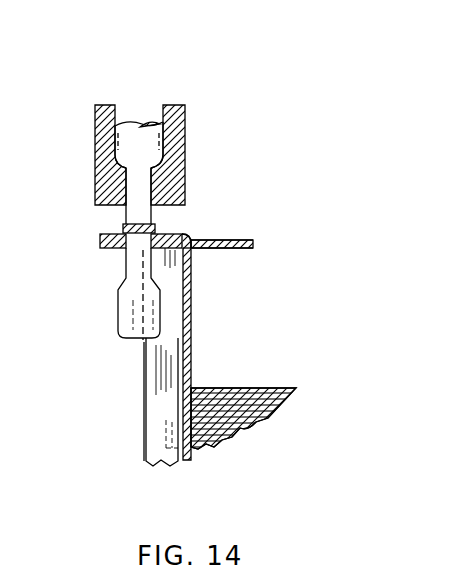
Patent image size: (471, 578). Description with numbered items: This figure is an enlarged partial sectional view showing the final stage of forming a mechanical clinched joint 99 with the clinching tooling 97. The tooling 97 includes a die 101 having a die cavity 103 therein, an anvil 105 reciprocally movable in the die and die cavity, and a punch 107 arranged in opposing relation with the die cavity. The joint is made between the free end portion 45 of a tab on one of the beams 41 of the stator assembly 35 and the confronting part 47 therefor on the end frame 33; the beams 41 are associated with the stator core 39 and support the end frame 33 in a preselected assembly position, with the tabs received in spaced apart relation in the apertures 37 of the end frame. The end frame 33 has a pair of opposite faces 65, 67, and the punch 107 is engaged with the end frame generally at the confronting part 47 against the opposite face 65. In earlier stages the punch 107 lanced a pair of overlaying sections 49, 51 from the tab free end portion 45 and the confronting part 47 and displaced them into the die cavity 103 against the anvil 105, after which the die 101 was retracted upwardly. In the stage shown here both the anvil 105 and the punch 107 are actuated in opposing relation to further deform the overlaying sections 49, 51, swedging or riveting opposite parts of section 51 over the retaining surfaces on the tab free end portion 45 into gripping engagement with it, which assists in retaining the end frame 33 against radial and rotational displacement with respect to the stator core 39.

The tooling 97 is at (82, 76).
The die 101 is at (95, 109).
The anvil 105 is at (153, 122).
The die cavity 103 is at (113, 165).
The overlaying section 49 is at (186, 220).
The overlaying section 51 is at (198, 226).
The mechanical clinched joint 99 is at (323, 208).
The opposite face 67 is at (240, 240).
The end frame 33 is at (260, 249).
The opposite face 65 is at (240, 249).
The apertures 37 is at (200, 256).
The free end portion 45 is at (108, 236).
The confronting part 47 is at (105, 249).
The punch 107 is at (118, 324).
The beams 41 is at (165, 470).
The stator core 39 is at (266, 421).
The stator assembly 35 is at (272, 476).